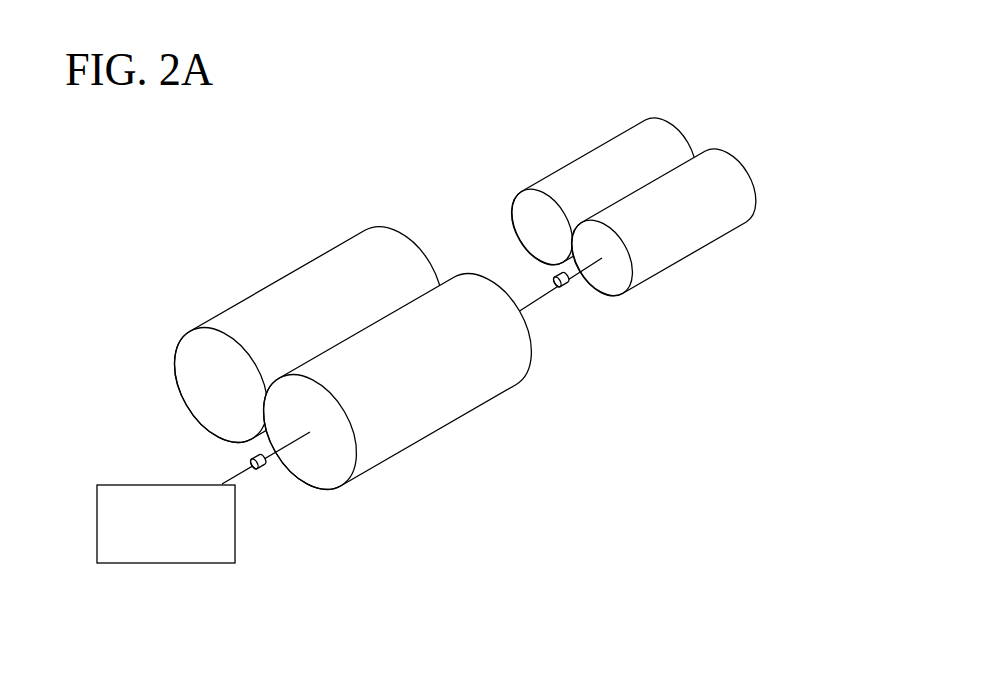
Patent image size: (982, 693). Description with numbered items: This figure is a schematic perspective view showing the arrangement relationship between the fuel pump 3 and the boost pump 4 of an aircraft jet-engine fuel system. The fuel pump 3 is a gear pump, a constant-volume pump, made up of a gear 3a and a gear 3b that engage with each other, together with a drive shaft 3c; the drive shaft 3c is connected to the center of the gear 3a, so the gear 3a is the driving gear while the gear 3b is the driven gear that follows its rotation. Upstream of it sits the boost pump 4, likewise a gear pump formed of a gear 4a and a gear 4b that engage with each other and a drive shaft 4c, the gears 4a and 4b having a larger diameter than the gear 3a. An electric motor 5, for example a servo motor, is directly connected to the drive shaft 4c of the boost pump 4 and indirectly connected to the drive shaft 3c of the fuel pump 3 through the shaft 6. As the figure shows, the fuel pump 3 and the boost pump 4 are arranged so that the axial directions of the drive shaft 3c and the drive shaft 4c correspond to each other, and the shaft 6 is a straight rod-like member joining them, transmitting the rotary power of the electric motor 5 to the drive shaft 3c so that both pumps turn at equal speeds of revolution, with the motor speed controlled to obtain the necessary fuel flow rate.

The fuel pump 3 is at (655, 229).
The gear 3a is at (723, 220).
The gear 3b is at (570, 178).
The drive shaft 3c is at (577, 277).
The boost pump 4 is at (348, 377).
The gear 4a is at (458, 395).
The gear 4b is at (243, 320).
The drive shaft 4c is at (267, 458).
The electric motor 5 is at (237, 543).
The shaft 6 is at (533, 303).